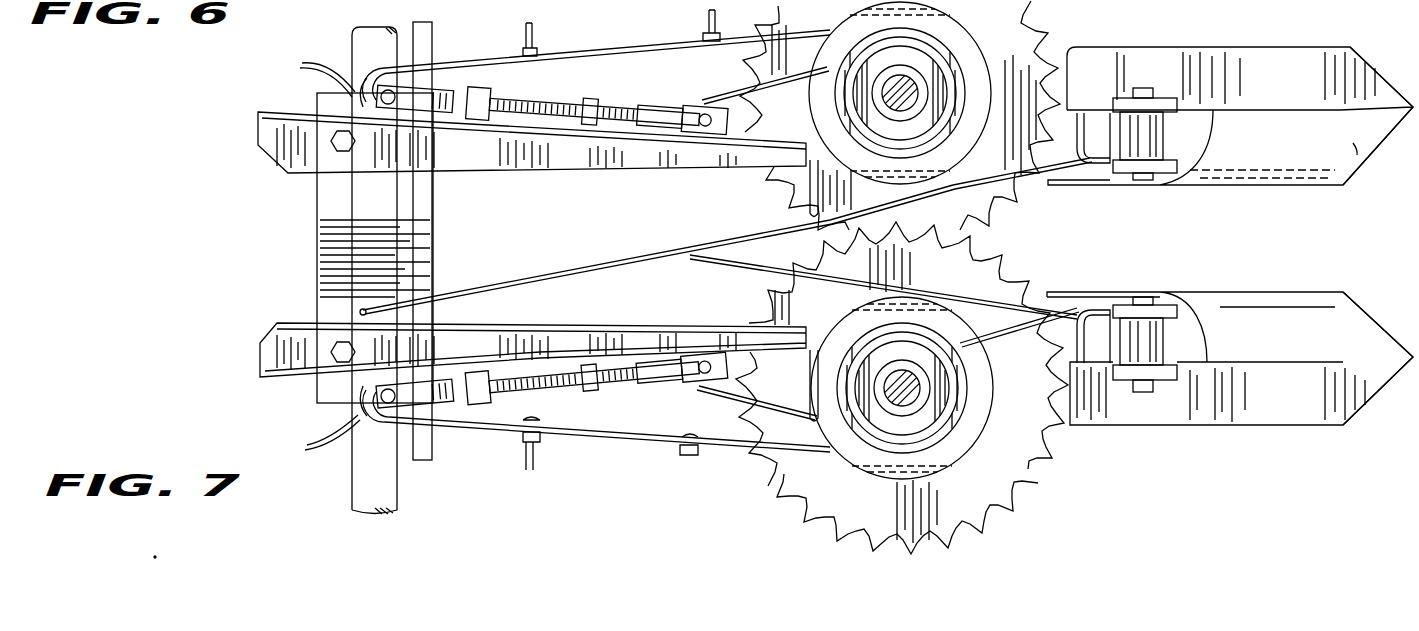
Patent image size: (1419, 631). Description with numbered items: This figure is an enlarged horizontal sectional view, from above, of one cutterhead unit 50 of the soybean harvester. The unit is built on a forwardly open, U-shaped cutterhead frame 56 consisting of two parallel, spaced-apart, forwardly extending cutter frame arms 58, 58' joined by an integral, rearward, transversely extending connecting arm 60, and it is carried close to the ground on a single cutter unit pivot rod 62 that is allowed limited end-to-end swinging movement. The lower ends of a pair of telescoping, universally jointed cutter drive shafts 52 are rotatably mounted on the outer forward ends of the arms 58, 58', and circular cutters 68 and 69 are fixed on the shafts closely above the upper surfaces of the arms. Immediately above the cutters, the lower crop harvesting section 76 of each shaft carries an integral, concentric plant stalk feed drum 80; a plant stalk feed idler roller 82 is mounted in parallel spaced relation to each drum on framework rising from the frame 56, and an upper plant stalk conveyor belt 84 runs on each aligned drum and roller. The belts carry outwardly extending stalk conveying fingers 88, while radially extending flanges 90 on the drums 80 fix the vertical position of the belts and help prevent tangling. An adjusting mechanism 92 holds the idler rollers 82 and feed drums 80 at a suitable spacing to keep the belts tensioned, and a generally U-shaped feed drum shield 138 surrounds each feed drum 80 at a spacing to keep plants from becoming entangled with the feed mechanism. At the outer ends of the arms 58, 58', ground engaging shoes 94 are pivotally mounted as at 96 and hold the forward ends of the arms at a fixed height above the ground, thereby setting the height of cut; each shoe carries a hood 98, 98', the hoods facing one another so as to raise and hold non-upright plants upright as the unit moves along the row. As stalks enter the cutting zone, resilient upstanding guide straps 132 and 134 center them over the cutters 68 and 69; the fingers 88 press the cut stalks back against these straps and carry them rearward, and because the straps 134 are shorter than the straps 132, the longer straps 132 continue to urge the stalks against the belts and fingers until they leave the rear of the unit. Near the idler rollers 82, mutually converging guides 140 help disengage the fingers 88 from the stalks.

The cutterhead unit 50 is at (1262, 46).
The cutter drive shaft 52 is at (995, 50).
The cutterhead frame 56 is at (410, 212).
The cutter frame arm 58 is at (1106, 304).
The cutter frame arm 58' is at (1116, 167).
The connecting arm 60 is at (413, 253).
The cutter unit pivot rod 62 is at (352, 40).
The circular cutter 68 is at (1007, 197).
The circular cutter 69 is at (1000, 275).
The lower crop harvesting section 76 is at (910, 83).
The plant stalk feed drum 80 is at (947, 103).
The plant stalk feed idler roller 82 is at (405, 85).
The upper plant stalk conveyor belt 84 is at (610, 50).
The stalk conveying fingers 88 is at (533, 33).
The radially extending flanges 90 is at (867, 23).
The adjusting mechanism 92 is at (547, 100).
The ground engaging shoe 94 is at (1293, 413).
The pivotal mounting 96 is at (1148, 395).
The hood 98 is at (1375, 328).
The hood 98' is at (1378, 129).
The resilient upstanding guide strap 132 is at (677, 246).
The guide strap 134 is at (733, 265).
The feed drum shield 138 is at (772, 415).
The mutually converging guides 140 is at (277, 157).